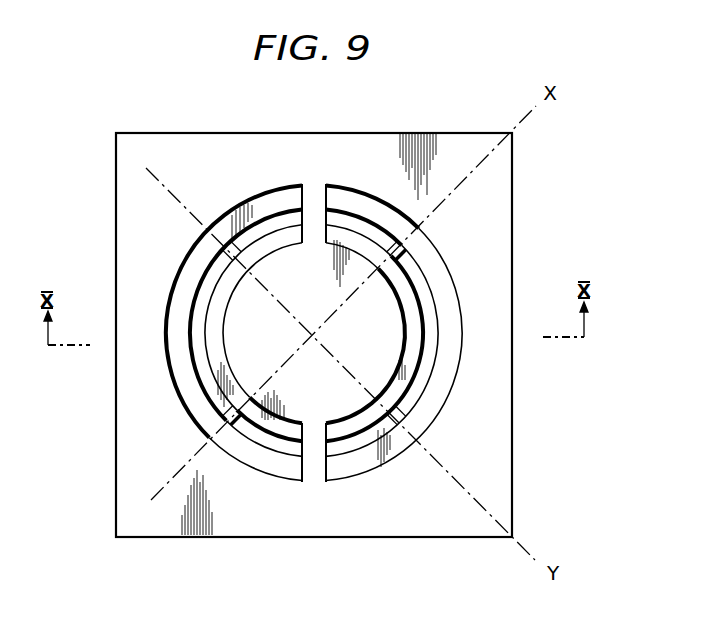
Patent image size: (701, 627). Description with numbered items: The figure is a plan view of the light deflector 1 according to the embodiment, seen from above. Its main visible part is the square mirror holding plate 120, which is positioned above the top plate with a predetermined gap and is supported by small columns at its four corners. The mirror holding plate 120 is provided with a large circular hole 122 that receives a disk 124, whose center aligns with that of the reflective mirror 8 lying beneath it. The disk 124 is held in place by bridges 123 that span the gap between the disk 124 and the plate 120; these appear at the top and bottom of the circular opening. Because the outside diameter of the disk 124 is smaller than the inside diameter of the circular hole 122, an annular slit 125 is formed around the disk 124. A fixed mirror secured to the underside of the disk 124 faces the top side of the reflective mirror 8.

The light deflector 1 is at (312, 335).
The mirror holding plate 120 is at (117, 171).
The circular hole 122 is at (460, 292).
The bridges 123 is at (308, 197).
The disk 124 is at (235, 291).
The annular slit 125 is at (196, 407).
The reflective mirror 8 is at (210, 357).